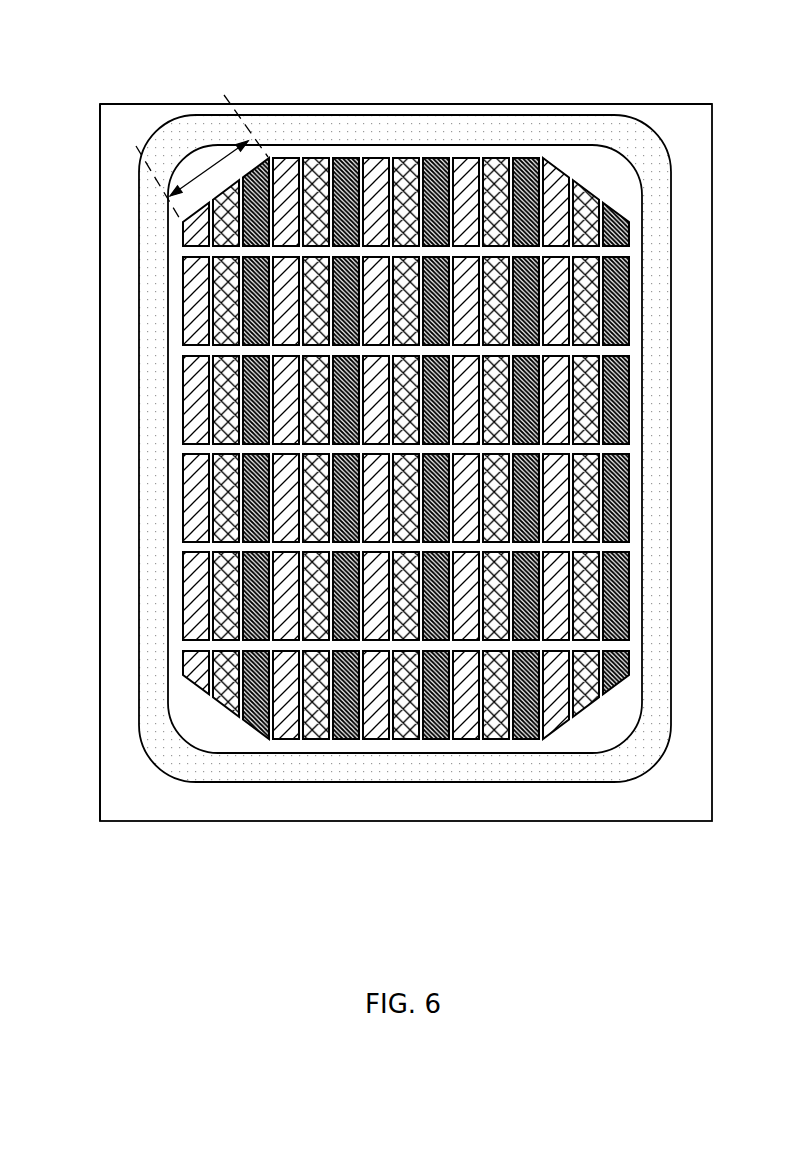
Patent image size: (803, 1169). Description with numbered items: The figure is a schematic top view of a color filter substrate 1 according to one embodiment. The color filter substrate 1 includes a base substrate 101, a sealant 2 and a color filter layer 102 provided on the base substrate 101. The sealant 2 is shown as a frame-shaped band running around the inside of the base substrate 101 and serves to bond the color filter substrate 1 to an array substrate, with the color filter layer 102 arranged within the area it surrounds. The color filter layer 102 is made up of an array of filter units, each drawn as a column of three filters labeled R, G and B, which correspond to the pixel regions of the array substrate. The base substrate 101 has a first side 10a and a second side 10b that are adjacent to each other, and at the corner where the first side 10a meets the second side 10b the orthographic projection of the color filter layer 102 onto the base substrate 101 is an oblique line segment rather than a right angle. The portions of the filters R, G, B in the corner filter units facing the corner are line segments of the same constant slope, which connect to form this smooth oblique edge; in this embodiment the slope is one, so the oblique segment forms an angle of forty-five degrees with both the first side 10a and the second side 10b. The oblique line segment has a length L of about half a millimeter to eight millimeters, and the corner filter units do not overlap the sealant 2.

The color filter substrate 1 is at (368, 492).
The base substrate 101 is at (625, 821).
The color filter layer 102 is at (406, 538).
The first side 10a is at (100, 288).
The second side 10b is at (282, 104).
The sealant 2 is at (397, 132).
The red sub-pixel R is at (279, 715).
The green sub-pixel G is at (407, 715).
The blue sub-pixel B is at (536, 715).
The length of the oblique line segment L is at (202, 157).